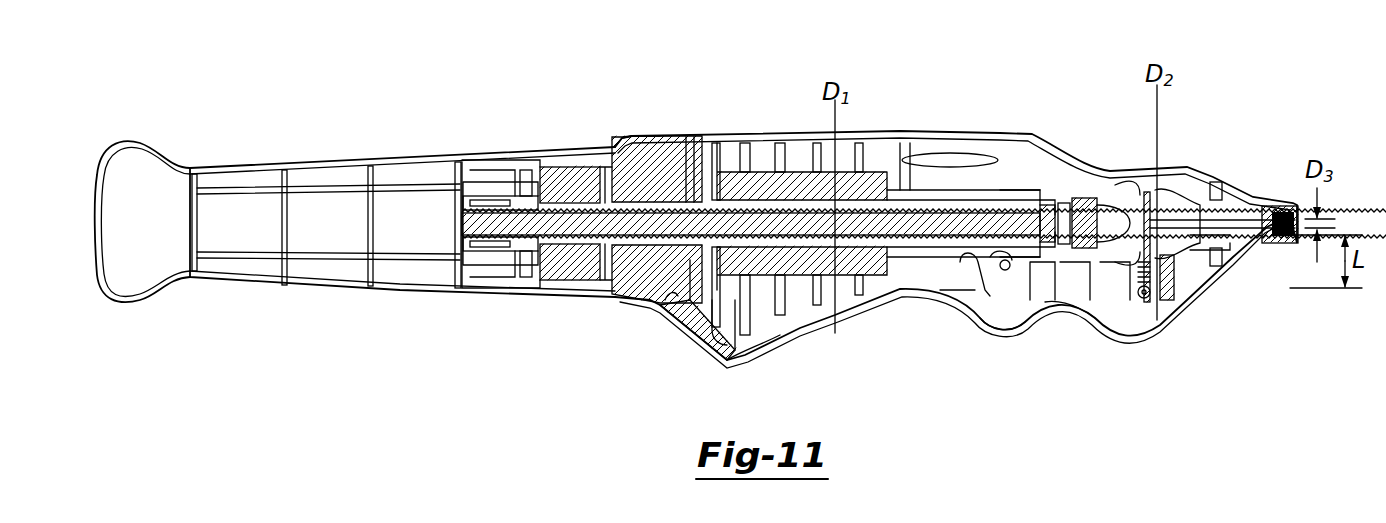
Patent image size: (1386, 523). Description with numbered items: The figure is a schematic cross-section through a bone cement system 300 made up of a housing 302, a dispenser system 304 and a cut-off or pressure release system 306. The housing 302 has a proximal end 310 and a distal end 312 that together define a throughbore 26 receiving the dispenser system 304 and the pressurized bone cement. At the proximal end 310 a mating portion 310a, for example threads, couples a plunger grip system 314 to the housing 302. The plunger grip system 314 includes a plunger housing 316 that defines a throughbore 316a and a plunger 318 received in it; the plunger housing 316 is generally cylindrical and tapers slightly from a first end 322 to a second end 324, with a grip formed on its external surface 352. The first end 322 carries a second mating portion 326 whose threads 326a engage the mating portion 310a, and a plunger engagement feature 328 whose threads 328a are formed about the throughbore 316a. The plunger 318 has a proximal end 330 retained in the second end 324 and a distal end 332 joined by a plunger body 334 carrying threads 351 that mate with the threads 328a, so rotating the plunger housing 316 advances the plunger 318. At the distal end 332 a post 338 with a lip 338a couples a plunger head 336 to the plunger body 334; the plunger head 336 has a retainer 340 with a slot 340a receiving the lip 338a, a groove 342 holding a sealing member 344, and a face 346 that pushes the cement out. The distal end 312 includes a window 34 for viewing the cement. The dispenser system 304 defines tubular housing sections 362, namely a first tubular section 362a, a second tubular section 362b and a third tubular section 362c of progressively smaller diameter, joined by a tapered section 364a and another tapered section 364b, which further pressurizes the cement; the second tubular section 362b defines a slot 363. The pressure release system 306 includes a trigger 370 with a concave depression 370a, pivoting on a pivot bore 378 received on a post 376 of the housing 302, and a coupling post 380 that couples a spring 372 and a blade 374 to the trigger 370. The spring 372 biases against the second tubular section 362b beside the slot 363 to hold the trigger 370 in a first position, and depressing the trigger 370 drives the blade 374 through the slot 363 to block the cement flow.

The bone cement system 300 is at (1222, 76).
The housing 302 is at (921, 128).
The dispenser system 304 is at (878, 262).
The pressure release system 306 is at (1170, 347).
The proximal end 310 is at (692, 346).
The mating portion 310a is at (678, 300).
The distal end 312 is at (1262, 306).
The plunger grip system 314 is at (632, 134).
The plunger housing 316 is at (561, 292).
The throughbore 316a is at (378, 229).
The plunger 318 is at (578, 200).
The first end 322 is at (613, 300).
The second end 324 is at (160, 165).
The second mating portion 326 is at (678, 148).
The threads 326a is at (697, 150).
The plunger engagement feature 328 is at (525, 200).
The threads 328a is at (501, 205).
The proximal end 330 is at (526, 277).
The distal end 332 is at (1000, 272).
The plunger body 334 is at (920, 243).
The plunger head 336 is at (1136, 215).
The post 338 is at (1044, 204).
The lip 338a is at (1043, 200).
The retainer 340 is at (1050, 258).
The slot 340a is at (1063, 205).
The groove 342 is at (1084, 200).
The sealing member 344 is at (1075, 262).
The face 346 is at (1100, 262).
The threads 351 is at (905, 190).
The external surface 352 is at (236, 160).
The tubular housing sections 362 is at (893, 172).
The first tubular section 362a is at (1012, 200).
The second tubular section 362b is at (1195, 250).
The third tubular section 362c is at (1220, 200).
The slot 363 is at (1149, 212).
The tapered section 364a is at (1110, 213).
The tapered section 364b is at (1192, 225).
The trigger 370 is at (1005, 342).
The concave depression 370a is at (1080, 312).
The spring 372 is at (1152, 295).
The blade 374 is at (1165, 260).
The post 376 is at (980, 300).
The pivot bore 378 is at (962, 288).
The coupling post 380 is at (1146, 300).
The window 34 is at (945, 158).
The throughbore 26 is at (720, 332).